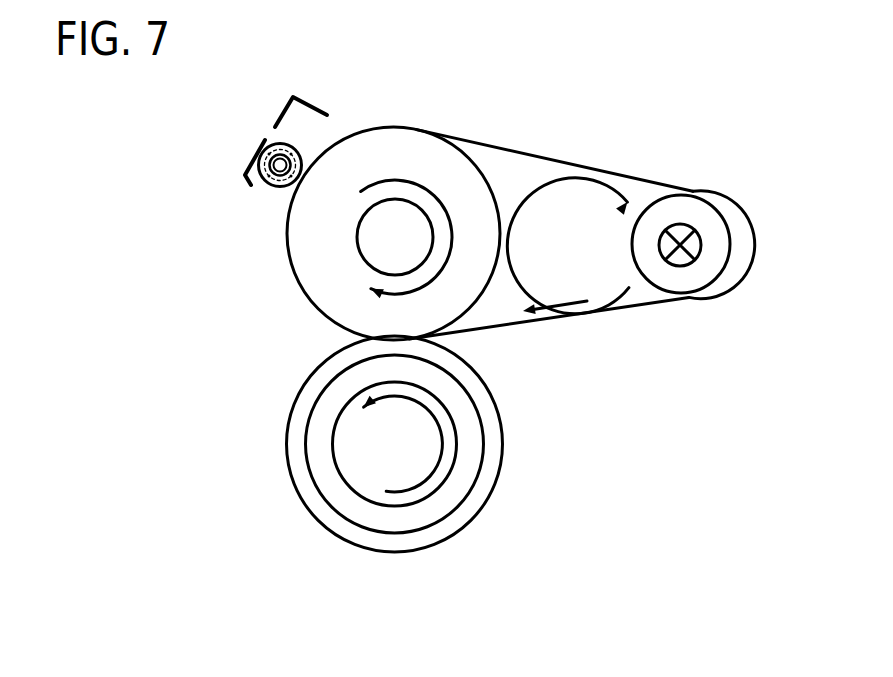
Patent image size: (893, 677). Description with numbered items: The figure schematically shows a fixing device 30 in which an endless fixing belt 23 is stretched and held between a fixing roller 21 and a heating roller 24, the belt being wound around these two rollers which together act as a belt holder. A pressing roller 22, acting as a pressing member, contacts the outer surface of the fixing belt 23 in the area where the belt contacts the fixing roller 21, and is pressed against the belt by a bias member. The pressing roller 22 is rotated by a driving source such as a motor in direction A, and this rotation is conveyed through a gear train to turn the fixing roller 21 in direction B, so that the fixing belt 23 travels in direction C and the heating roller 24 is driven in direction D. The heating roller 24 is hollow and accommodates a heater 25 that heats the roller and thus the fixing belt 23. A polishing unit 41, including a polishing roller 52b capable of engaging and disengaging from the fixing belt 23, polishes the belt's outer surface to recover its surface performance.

The fixing roller 21 is at (317, 300).
The pressing roller 22 is at (492, 452).
The fixing belt 23 is at (556, 160).
The heating roller 24 is at (703, 212).
The heater 25 is at (702, 247).
The fixing device 30 is at (246, 275).
The polishing unit 41 is at (238, 147).
The polishing roller 52b is at (276, 186).